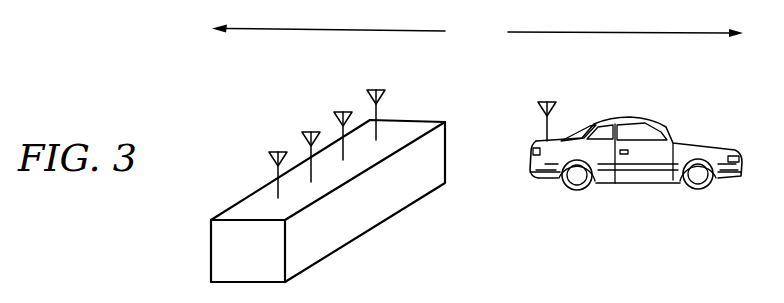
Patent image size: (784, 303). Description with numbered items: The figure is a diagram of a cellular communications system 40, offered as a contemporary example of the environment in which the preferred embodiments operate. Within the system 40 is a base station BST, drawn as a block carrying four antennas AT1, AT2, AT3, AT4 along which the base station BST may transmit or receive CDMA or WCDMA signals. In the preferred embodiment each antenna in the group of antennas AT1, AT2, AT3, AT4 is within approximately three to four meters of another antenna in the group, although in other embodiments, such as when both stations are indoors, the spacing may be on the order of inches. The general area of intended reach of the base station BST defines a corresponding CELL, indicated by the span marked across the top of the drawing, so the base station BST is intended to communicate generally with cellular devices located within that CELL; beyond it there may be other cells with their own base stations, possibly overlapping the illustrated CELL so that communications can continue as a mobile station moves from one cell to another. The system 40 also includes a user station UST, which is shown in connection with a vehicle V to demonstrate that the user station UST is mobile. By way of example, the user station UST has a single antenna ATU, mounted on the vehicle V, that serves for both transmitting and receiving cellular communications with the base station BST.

The cellular communications system 40 is at (183, 74).
The cell CELL is at (477, 31).
The base station BST is at (328, 201).
The antenna AT1 is at (272, 155).
The antenna AT2 is at (304, 135).
The antenna AT3 is at (334, 115).
The antenna AT4 is at (367, 95).
The vehicle V is at (704, 143).
The user station UST is at (637, 183).
The antenna ATU is at (538, 108).